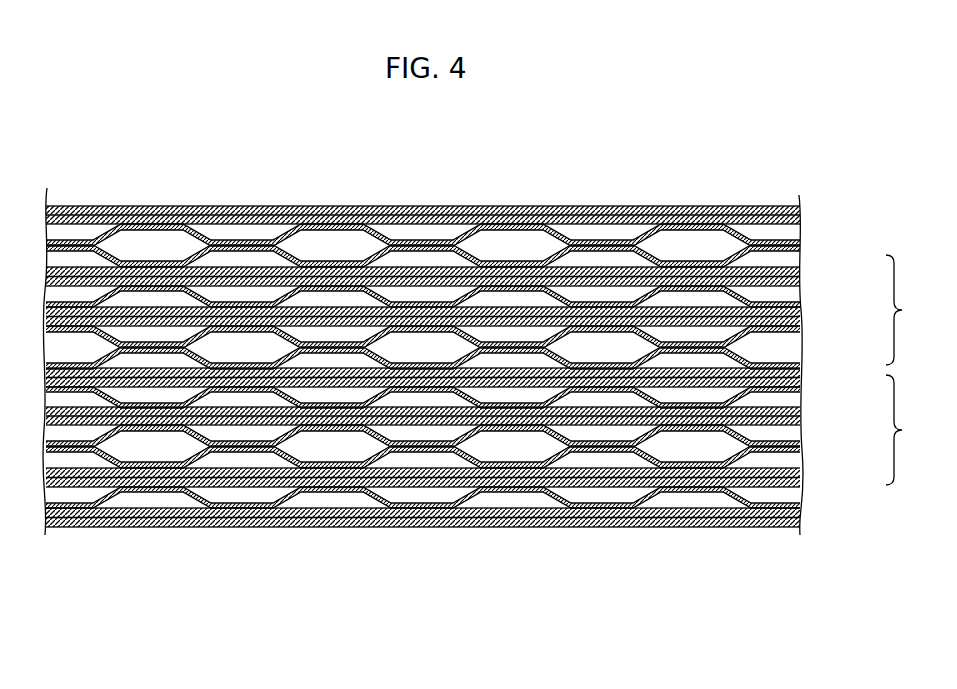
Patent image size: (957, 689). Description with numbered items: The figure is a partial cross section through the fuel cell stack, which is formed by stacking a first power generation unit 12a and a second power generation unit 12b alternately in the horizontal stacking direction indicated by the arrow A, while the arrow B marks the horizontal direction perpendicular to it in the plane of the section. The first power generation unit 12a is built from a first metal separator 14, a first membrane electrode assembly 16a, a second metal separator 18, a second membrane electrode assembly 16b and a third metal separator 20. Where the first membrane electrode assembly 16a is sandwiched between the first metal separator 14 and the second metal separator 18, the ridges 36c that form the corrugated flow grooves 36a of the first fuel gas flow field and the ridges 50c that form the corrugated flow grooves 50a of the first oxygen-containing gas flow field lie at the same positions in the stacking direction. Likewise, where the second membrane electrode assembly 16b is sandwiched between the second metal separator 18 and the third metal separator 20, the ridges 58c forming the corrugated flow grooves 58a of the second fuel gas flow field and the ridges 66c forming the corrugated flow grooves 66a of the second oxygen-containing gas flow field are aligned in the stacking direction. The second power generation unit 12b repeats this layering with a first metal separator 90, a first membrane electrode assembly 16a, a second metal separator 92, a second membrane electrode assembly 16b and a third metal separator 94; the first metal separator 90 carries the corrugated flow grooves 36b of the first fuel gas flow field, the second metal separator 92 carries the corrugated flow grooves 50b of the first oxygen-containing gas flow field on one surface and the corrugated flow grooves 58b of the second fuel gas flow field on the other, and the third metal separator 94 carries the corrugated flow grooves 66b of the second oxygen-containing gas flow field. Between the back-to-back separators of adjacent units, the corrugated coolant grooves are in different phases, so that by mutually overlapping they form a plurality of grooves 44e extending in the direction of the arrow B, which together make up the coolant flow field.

The first power generation unit 12a is at (911, 310).
The second power generation unit 12b is at (912, 430).
The first metal separator 14 is at (746, 353).
The first membrane electrode assembly 16a is at (809, 318).
The second membrane electrode assembly 16b is at (810, 279).
The second metal separator 18 is at (751, 297).
The third metal separator 20 is at (800, 259).
The corrugated flow grooves 36a is at (102, 303).
The corrugated flow grooves 36b is at (602, 432).
The ridges 36c is at (400, 329).
The grooves 44e is at (223, 348).
The corrugated flow grooves 50a is at (158, 300).
The corrugated flow grooves 50b is at (612, 404).
The ridges 50c is at (603, 302).
The corrugated flow grooves 58a is at (410, 294).
The corrugated flow grooves 58b is at (502, 392).
The ridges 58c is at (291, 338).
The corrugated flow grooves 66a is at (415, 257).
The corrugated flow grooves 66b is at (520, 363).
The ridges 66c is at (512, 263).
The first metal separator 90 is at (754, 456).
The second metal separator 92 is at (791, 394).
The third metal separator 94 is at (805, 363).
The arrow A is at (335, 545).
The arrow B is at (328, 632).